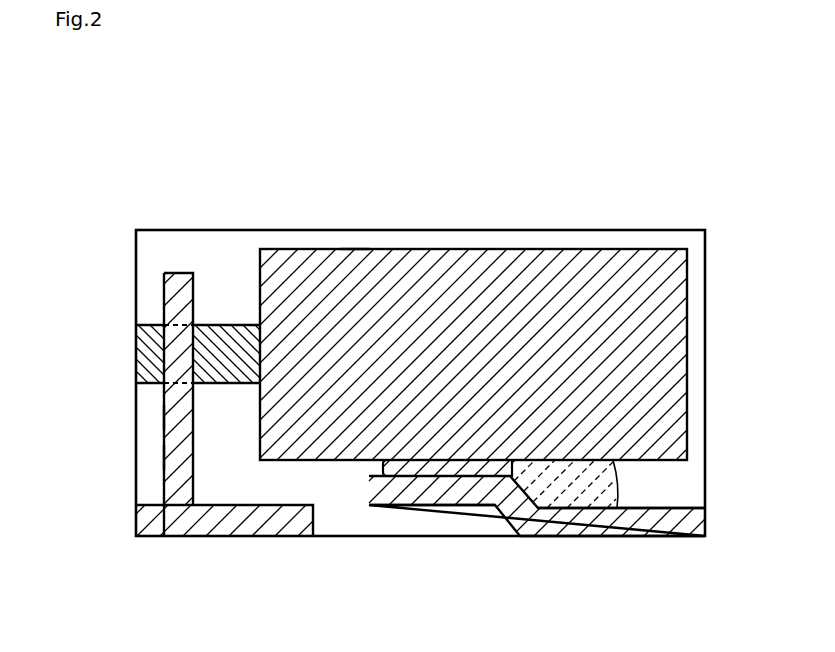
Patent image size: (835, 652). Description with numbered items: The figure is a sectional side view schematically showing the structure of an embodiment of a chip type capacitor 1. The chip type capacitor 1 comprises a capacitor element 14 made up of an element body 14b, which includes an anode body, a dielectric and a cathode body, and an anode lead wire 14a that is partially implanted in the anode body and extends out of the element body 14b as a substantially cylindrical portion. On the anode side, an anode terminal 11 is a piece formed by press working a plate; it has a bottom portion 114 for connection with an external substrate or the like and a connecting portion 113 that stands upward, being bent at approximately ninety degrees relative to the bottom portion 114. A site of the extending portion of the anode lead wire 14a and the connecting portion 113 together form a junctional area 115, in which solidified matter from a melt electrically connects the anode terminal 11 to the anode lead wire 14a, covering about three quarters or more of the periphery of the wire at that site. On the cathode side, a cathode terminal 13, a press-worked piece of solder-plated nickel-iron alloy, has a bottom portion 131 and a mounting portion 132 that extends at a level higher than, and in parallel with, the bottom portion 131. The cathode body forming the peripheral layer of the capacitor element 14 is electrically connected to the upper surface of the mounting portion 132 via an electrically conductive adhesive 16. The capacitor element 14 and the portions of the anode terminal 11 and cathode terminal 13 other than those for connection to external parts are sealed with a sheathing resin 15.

The chip type capacitor 1 is at (728, 222).
The anode terminal 11 is at (165, 459).
The connecting portion 113 is at (170, 420).
The bottom portion 114 is at (235, 536).
The junctional area 115 is at (165, 284).
The cathode terminal 13 is at (688, 505).
The bottom portion 131 is at (605, 530).
The mounting portion 132 is at (448, 498).
The capacitor element 14 is at (478, 250).
The anode lead wire 14a is at (238, 325).
The element body 14b is at (352, 252).
The sheathing resin 15 is at (577, 243).
The electrically conductive adhesive 16 is at (383, 476).